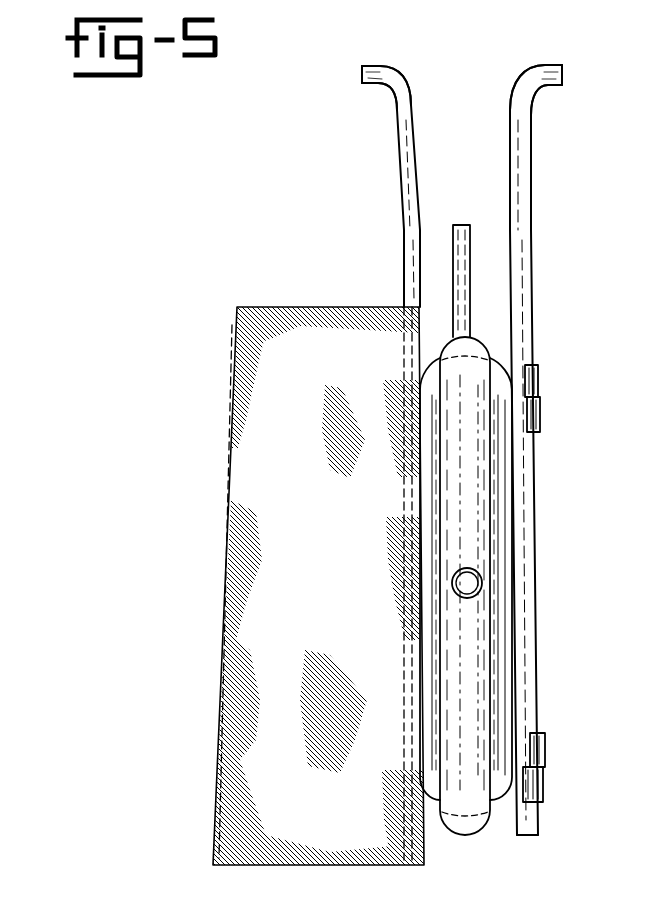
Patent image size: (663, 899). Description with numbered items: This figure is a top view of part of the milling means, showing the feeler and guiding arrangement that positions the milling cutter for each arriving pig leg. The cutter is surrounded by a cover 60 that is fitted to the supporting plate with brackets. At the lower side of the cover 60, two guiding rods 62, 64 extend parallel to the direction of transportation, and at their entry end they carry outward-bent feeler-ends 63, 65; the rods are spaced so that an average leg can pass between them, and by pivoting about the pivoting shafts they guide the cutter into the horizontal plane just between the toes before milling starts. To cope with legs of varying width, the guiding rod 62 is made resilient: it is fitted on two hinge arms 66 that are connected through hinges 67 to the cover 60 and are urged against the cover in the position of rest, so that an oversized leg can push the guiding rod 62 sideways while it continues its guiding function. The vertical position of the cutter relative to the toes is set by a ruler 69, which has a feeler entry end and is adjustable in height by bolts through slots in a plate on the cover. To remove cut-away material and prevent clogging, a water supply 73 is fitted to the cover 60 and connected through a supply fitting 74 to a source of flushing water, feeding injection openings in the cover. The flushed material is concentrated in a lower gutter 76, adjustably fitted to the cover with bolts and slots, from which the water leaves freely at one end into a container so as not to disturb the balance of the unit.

The cover 60 is at (513, 662).
The guiding rod 62 is at (528, 257).
The feeler-end 63 is at (552, 86).
The guiding rod 64 is at (399, 186).
The feeler-end 65 is at (376, 88).
The hinge arm 66 is at (541, 383).
The hinge 67 is at (542, 412).
The ruler 69 is at (461, 224).
The water supply 73 is at (482, 498).
The supply fitting 74 is at (472, 588).
The gutter 76 is at (253, 490).